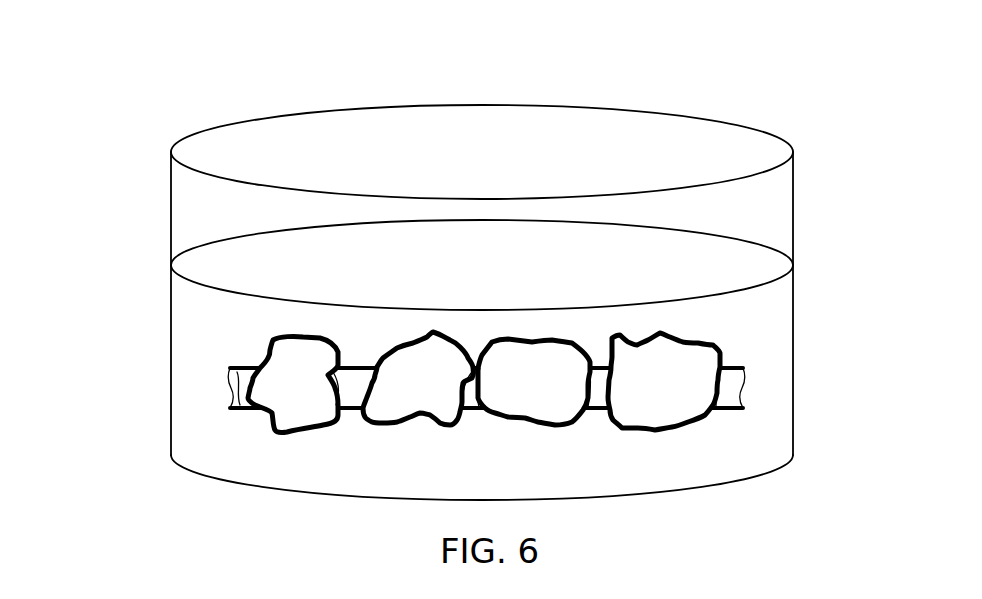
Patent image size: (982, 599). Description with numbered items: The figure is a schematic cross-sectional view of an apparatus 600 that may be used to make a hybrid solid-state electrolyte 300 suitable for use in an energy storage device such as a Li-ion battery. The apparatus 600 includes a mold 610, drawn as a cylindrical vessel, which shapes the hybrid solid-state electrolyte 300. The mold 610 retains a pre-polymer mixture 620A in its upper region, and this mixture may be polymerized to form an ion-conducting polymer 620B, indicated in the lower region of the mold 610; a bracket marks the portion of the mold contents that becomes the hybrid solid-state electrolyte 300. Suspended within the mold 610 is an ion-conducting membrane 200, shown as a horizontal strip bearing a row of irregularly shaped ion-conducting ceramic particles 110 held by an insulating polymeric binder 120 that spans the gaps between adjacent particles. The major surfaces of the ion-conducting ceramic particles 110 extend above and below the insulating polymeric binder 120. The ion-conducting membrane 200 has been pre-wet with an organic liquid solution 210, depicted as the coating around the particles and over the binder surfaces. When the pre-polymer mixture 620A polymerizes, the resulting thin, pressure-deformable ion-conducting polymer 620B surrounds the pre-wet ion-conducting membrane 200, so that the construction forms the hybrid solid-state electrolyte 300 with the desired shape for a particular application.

The apparatus 600 is at (227, 82).
The mold 610 is at (793, 210).
The pre-polymer mixture 620A is at (208, 313).
The ion-conducting polymer 620B is at (208, 442).
The hybrid solid-state electrolyte 300 is at (800, 262).
The ion-conducting membrane 200 is at (160, 322).
The ion-conducting ceramic particles 110 is at (695, 360).
The insulating polymeric binder 120 is at (597, 390).
The organic liquid solution 210 is at (540, 343).